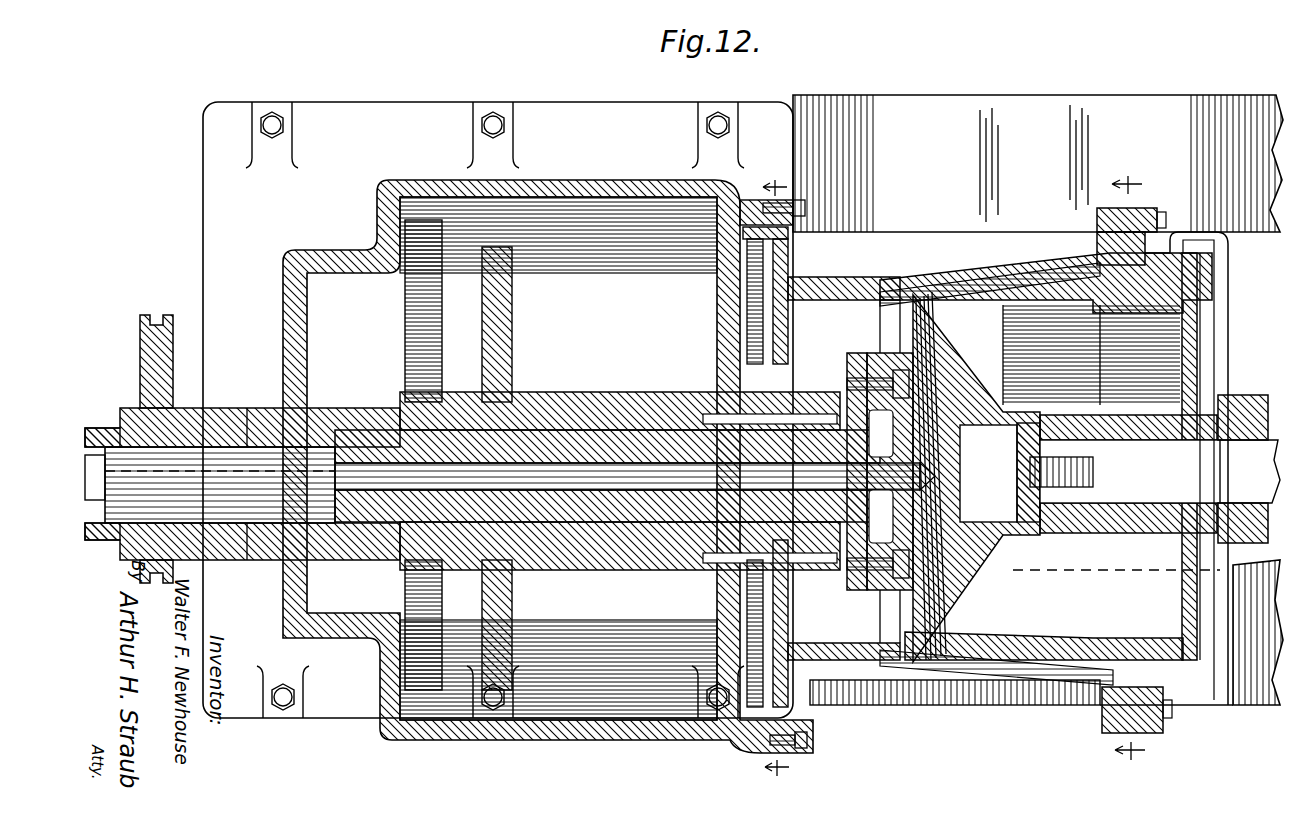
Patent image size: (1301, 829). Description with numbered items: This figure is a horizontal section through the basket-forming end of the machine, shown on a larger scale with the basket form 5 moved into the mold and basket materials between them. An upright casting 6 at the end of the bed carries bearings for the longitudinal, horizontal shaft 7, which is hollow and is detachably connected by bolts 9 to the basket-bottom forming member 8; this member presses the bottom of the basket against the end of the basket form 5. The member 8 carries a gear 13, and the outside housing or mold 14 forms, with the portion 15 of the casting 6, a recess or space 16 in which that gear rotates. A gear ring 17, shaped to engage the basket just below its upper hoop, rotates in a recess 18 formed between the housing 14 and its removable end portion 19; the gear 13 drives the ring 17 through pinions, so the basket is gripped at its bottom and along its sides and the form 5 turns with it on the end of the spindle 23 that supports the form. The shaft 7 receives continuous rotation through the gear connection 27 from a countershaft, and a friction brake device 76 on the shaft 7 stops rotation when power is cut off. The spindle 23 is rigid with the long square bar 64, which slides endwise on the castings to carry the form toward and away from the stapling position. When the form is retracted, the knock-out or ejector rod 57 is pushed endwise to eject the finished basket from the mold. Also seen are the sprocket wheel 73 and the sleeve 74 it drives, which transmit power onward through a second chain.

The basket form 5 is at (985, 600).
The upright casting 6 is at (578, 735).
The shaft 7 is at (232, 440).
The basket-bottom forming member 8 is at (860, 290).
The bolts 9 is at (852, 380).
The gear 13 is at (745, 258).
The outside housing or mold 14 is at (968, 272).
The portion of the casting 15 is at (775, 180).
The recess or space 16 is at (748, 310).
The gear ring 17 is at (1097, 246).
The recess 18 is at (1097, 222).
The removable end portion 19 is at (1205, 698).
The spindle 23 is at (1118, 474).
The gear connection 27 is at (515, 310).
The knock-out or ejector rod 57 is at (686, 500).
The long square bar 64 is at (1249, 469).
The sprocket wheel 73 is at (165, 315).
The sleeve 74 is at (100, 428).
The friction brake device 76 is at (505, 365).